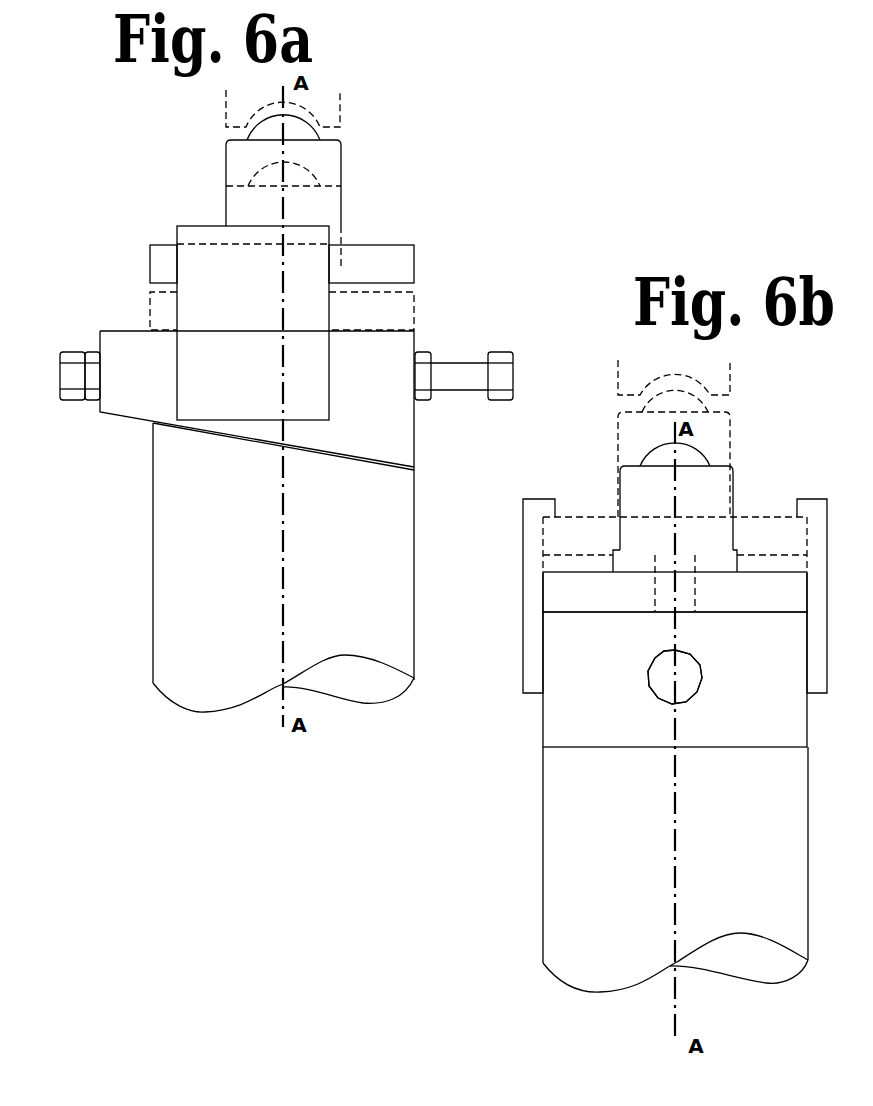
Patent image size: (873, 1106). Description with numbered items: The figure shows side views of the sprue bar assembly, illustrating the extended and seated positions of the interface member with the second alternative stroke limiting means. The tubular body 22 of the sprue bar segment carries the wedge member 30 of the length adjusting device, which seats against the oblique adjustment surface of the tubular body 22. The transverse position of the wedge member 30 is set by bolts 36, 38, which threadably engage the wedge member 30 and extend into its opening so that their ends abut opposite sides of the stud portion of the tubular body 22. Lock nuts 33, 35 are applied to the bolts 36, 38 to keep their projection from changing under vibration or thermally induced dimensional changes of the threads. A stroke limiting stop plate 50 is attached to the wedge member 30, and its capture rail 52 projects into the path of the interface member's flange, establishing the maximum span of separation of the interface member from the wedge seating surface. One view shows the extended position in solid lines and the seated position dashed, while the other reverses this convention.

In FIG. 6a, the tubular body 22 is at (410, 548).
In FIG. 6b, the tubular body 22 is at (553, 825).
In FIG. 6a, the wedge member 30 is at (408, 436).
In FIG. 6b, the wedge member 30 is at (550, 710).
In FIG. 6a, the lock nut 33 is at (427, 398).
In FIG. 6b, the lock nut 33 is at (695, 684).
In FIG. 6a, the lock nut 35 is at (93, 397).
In FIG. 6a, the bolt 36 is at (504, 355).
In FIG. 6b, the bolt 36 is at (687, 665).
In FIG. 6a, the bolt 38 is at (66, 372).
In FIG. 6a, the stop plate 50 is at (282, 323).
In FIG. 6b, the stop plate 50 is at (533, 577).
In FIG. 6b, the capture rail 52 is at (548, 510).